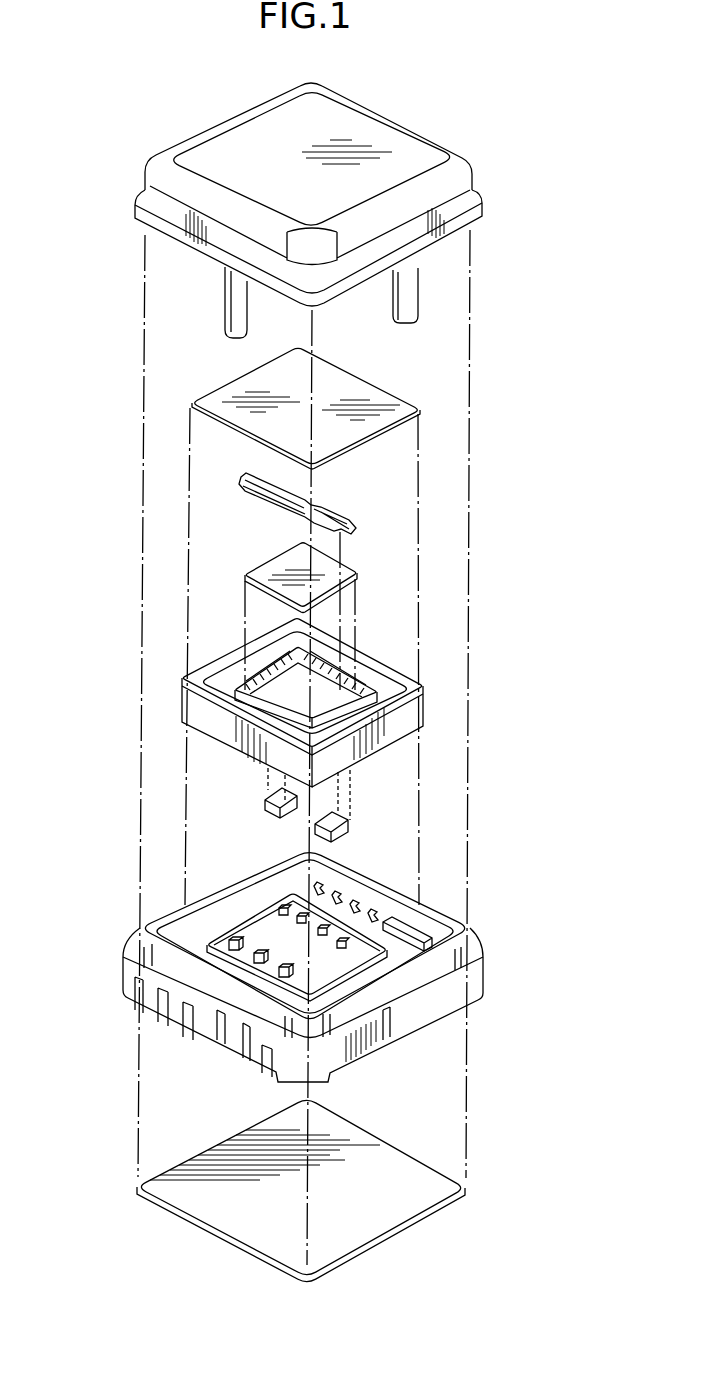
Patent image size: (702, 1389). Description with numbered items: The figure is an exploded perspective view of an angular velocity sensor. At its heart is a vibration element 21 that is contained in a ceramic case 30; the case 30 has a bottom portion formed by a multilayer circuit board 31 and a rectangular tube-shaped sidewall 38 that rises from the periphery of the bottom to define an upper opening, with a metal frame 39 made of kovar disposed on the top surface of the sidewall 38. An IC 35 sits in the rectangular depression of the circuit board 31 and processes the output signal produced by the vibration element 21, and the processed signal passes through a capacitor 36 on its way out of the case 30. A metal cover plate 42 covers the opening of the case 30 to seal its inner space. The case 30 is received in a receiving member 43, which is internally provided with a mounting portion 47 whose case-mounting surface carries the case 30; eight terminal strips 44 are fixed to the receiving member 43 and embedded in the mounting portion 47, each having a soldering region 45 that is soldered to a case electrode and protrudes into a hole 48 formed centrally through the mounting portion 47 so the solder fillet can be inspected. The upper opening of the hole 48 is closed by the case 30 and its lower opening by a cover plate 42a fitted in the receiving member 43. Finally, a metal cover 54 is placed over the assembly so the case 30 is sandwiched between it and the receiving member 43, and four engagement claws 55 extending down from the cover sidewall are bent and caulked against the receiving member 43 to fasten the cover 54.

The cover 54 is at (213, 147).
The engagement claw 55 is at (230, 305).
The cover plate 42 is at (250, 380).
The vibration element 21 is at (255, 493).
The IC 35 is at (270, 568).
The case 30 is at (302, 702).
The multilayer circuit board 31 is at (245, 675).
The sidewall 38 is at (413, 717).
The metal frame 39 is at (387, 662).
The capacitor 36 is at (260, 805).
The receiving member 43 is at (303, 957).
The terminal strips 44 is at (342, 912).
The soldering region 45 is at (403, 923).
The mounting portion 47 is at (217, 962).
The hole 48 is at (337, 967).
The cover plate 42a is at (183, 1203).